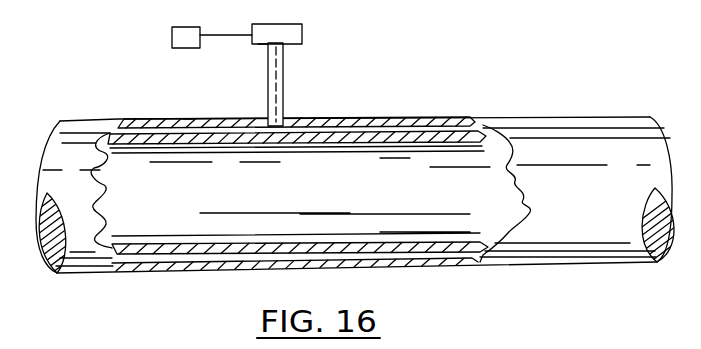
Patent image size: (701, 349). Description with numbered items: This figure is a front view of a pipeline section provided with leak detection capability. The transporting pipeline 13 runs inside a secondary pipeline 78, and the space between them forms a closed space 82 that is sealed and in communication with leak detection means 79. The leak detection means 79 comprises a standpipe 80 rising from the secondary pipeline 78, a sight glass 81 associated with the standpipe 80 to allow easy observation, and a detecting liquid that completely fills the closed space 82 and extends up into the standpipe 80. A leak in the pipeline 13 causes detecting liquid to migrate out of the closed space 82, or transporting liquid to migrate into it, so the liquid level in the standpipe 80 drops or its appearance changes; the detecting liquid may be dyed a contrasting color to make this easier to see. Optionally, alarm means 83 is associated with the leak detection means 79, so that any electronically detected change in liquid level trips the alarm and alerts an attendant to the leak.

The pipeline 13 is at (229, 249).
The secondary pipeline 78 is at (391, 121).
The leak detection means 79 is at (310, 33).
The standpipe 80 is at (280, 91).
The sight glass 81 is at (258, 45).
The closed space 82 is at (188, 118).
The alarm means 83 is at (178, 44).